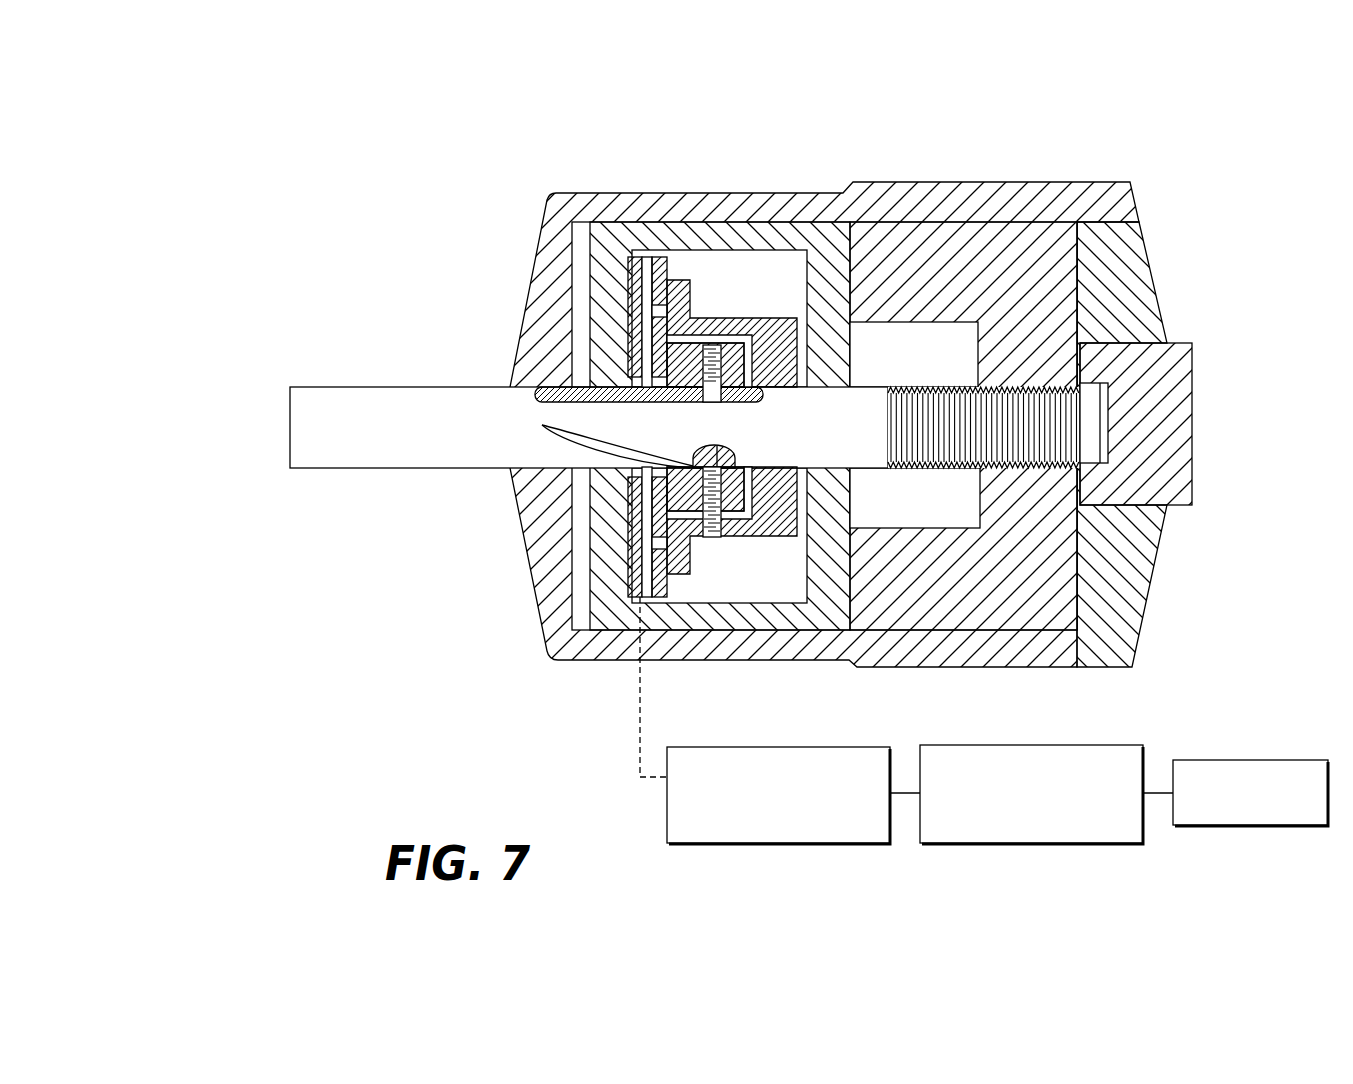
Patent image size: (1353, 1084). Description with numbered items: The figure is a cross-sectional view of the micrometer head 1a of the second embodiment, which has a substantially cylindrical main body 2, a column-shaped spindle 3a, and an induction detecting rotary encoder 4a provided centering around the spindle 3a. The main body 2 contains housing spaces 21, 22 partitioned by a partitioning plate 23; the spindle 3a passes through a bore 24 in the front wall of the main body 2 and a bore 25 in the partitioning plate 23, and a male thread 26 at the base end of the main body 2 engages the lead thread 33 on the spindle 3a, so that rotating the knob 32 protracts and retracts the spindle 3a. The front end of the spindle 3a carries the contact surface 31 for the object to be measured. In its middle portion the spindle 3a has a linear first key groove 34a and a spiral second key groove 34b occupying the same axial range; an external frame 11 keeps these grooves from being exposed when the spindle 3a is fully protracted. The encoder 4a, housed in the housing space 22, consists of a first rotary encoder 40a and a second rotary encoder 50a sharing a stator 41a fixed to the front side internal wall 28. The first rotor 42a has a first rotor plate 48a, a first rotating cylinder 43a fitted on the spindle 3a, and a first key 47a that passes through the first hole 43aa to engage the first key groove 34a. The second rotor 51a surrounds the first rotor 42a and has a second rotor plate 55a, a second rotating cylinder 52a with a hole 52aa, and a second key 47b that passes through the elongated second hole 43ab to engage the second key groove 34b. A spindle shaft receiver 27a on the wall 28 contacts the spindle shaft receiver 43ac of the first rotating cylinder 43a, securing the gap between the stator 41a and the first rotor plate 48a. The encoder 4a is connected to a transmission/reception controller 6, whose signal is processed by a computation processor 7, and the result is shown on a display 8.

The micrometer head 1a is at (1049, 157).
The main body 2 is at (878, 237).
The housing space 21 is at (925, 340).
The external frame 11 is at (553, 217).
The induction detecting rotary encoder 4a is at (676, 265).
The first rotary encoder 40a is at (642, 362).
The second rotary encoder 50a is at (749, 606).
The stator 41a is at (637, 297).
The front side internal wall 28 is at (600, 342).
The spindle shaft receiver 43ac is at (637, 368).
The first hole 43aa is at (713, 343).
The contact surface 31 is at (290, 412).
The first key groove 34a is at (560, 395).
The spindle shaft receiver 27a is at (620, 390).
The second key groove 34b is at (545, 427).
The bore 24 is at (525, 463).
The first rotor plate 48a is at (663, 392).
The first rotating cylinder 43a is at (712, 400).
The first key 47a is at (722, 398).
The first rotor 42a is at (625, 420).
The second hole 43ab is at (727, 458).
The bore 25 is at (830, 386).
The male thread 26 is at (1057, 387).
The spindle 3a is at (870, 453).
The lead thread 33 is at (955, 455).
The partitioning plate 23 is at (852, 515).
The knob 32 is at (1185, 437).
The hole 52aa is at (720, 494).
The housing space 22 is at (685, 592).
The second rotor plate 55a is at (670, 582).
The second rotating cylinder 52a is at (712, 540).
The second key 47b is at (692, 540).
The second rotor 51a is at (723, 695).
The transmission/reception controller 6 is at (757, 843).
The computation processor 7 is at (1010, 843).
The display 8 is at (1250, 825).